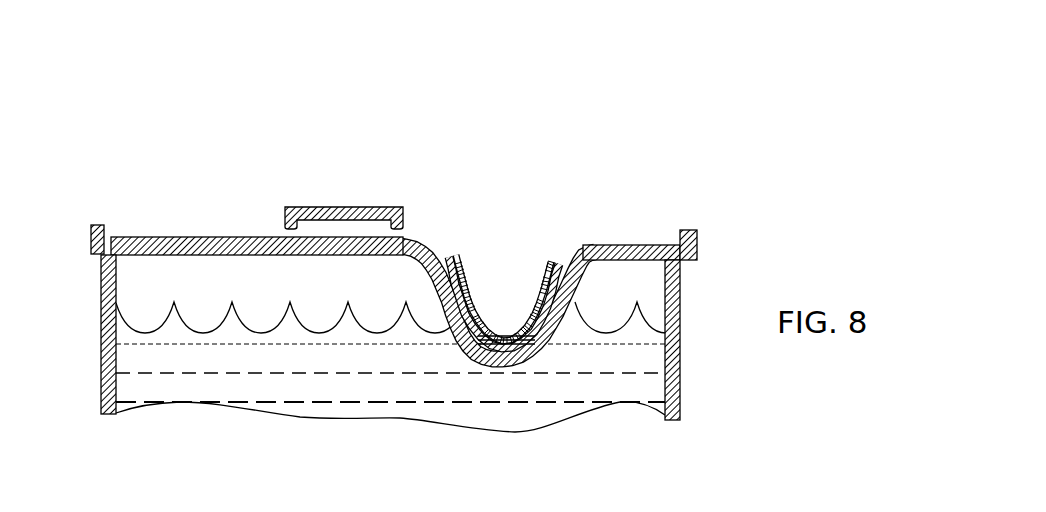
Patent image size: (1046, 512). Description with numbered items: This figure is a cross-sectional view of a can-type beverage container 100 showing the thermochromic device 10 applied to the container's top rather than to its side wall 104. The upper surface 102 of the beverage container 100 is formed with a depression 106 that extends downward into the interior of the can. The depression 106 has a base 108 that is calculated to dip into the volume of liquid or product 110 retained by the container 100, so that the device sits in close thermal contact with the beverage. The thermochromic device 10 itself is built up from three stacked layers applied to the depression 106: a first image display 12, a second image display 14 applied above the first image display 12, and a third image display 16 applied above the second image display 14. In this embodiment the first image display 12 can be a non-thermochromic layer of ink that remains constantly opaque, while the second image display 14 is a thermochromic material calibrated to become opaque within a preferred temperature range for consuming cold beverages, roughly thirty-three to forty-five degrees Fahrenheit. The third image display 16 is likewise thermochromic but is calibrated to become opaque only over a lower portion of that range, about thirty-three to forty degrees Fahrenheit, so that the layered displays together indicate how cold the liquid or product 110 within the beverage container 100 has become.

The thermochromic device 10 is at (488, 288).
The first image display 12 is at (478, 337).
The second image display 14 is at (470, 352).
The third image display 16 is at (482, 297).
The beverage container 100 is at (443, 256).
The upper surface 102 is at (178, 237).
The side wall 104 is at (680, 327).
The depression 106 is at (535, 343).
The base 108 is at (497, 347).
The liquid or product 110 is at (310, 390).